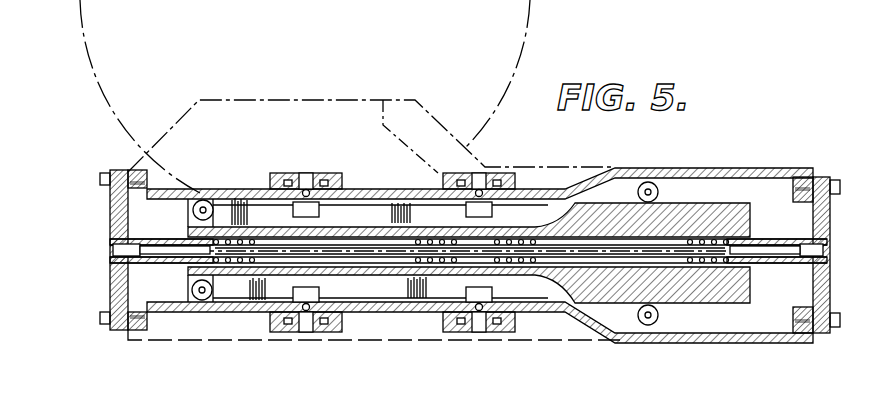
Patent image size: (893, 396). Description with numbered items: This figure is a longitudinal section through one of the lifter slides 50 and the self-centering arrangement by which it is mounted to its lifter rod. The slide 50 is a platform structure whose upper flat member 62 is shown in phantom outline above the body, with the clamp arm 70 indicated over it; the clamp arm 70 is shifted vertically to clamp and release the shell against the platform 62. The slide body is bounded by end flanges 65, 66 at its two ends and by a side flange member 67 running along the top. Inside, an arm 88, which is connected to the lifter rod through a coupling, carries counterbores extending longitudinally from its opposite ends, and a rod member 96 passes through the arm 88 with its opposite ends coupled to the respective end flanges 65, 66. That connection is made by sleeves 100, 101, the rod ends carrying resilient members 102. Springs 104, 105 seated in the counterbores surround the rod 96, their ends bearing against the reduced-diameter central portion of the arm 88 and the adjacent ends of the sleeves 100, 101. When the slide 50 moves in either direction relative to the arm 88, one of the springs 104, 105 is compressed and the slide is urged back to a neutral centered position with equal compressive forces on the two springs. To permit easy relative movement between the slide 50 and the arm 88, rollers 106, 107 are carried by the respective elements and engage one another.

The lifter slide 50 is at (103, 158).
The flat member 62 is at (237, 100).
The end flange 65 is at (110, 292).
The end flange 66 is at (830, 213).
The side flange member 67 is at (695, 168).
The clamp arm 70 is at (425, 113).
The arm 88 is at (620, 303).
The rod member 96 is at (366, 257).
The sleeve 100 is at (174, 238).
The sleeve 101 is at (800, 239).
The resilient member 102 is at (157, 261).
The spring 104 is at (230, 262).
The spring 105 is at (520, 262).
The roller 106 is at (433, 192).
The roller 107 is at (205, 200).